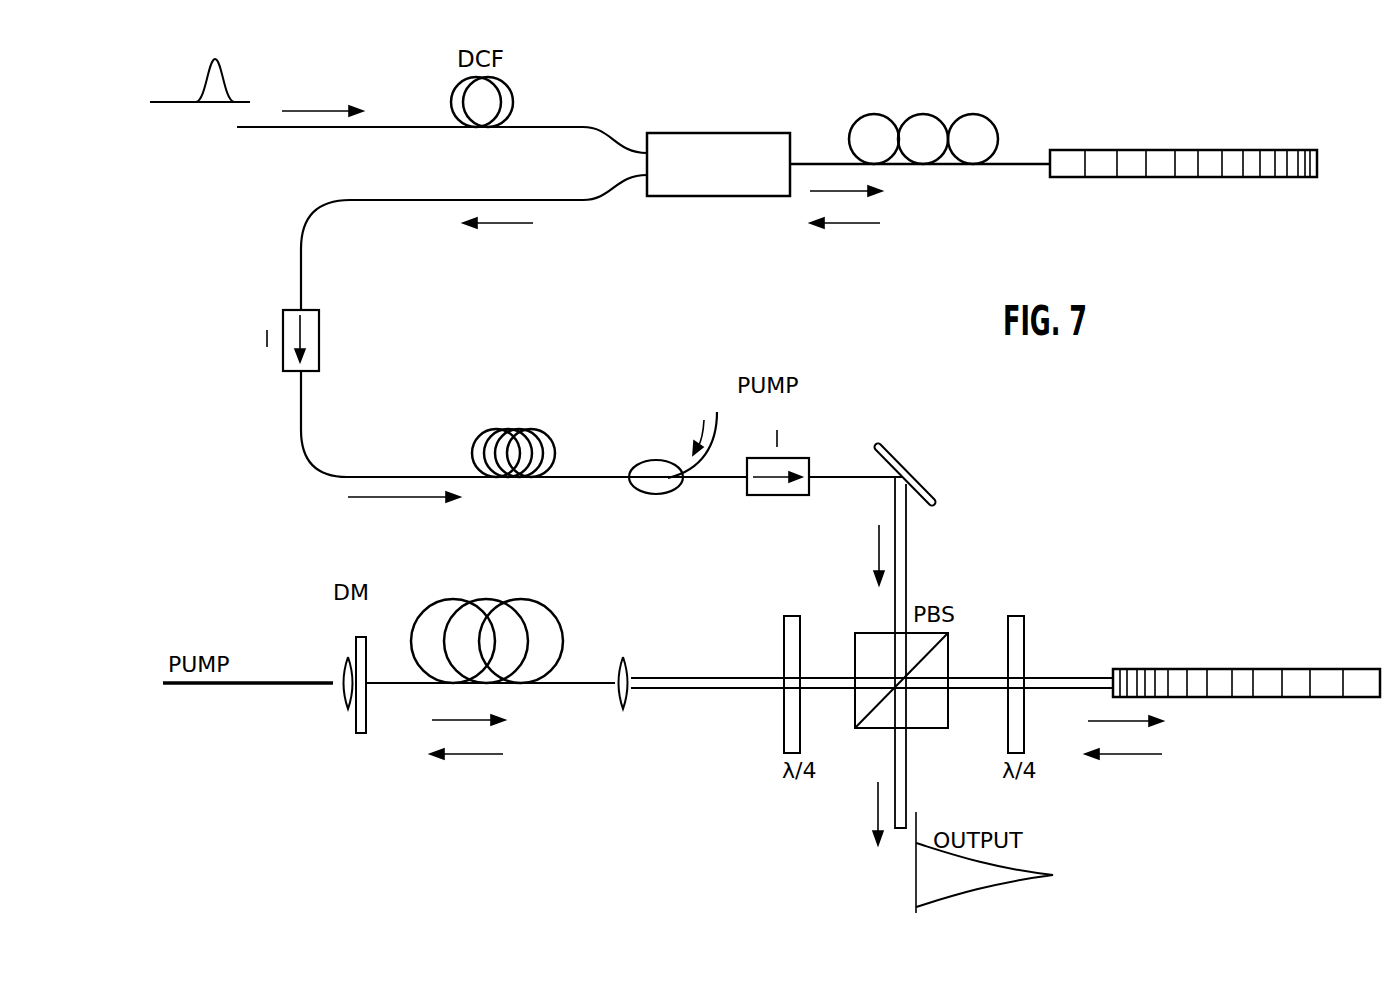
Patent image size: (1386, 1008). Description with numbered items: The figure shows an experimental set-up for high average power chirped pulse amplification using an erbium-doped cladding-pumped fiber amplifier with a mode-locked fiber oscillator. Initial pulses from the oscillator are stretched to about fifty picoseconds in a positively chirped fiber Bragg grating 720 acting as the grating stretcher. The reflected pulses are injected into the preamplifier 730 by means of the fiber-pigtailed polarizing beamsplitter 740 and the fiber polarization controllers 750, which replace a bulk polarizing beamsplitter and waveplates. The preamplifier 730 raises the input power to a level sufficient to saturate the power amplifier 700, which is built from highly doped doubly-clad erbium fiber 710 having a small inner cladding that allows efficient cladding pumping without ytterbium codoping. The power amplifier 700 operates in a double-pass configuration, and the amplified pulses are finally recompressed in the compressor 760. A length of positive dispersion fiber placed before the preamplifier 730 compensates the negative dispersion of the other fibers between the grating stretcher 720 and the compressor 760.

The power amplifier 700 is at (451, 788).
The doubly-clad erbium fiber 710 is at (563, 611).
The fiber Bragg grating 720 is at (1182, 150).
The preamplifier 730 is at (522, 428).
The fiber-pigtailed polarizing beamsplitter 740 is at (712, 133).
The fiber polarization controllers 750 is at (997, 128).
The compressor 760 is at (1150, 669).